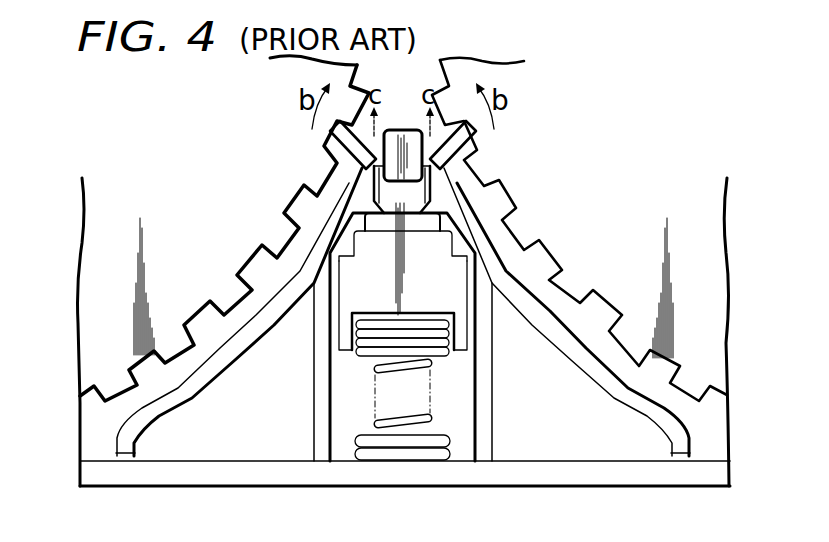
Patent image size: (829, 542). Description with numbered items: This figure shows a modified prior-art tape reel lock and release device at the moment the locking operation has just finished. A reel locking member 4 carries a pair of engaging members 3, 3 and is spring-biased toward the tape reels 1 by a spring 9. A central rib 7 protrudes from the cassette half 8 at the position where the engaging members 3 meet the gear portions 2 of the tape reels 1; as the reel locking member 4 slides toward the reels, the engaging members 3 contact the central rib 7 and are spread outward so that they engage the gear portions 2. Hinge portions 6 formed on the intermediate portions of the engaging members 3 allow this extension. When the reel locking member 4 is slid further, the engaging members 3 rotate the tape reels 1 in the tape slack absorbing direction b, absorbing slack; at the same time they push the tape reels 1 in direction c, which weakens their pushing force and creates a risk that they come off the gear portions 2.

The tape reel 1 is at (78, 227).
The gear portion 2 is at (173, 340).
The engaging member 3 is at (373, 188).
The reel locking member 4 is at (348, 294).
The hinge portion 6 is at (329, 136).
The central rib 7 is at (400, 126).
The cassette half 8 is at (547, 478).
The spring 9 is at (372, 420).